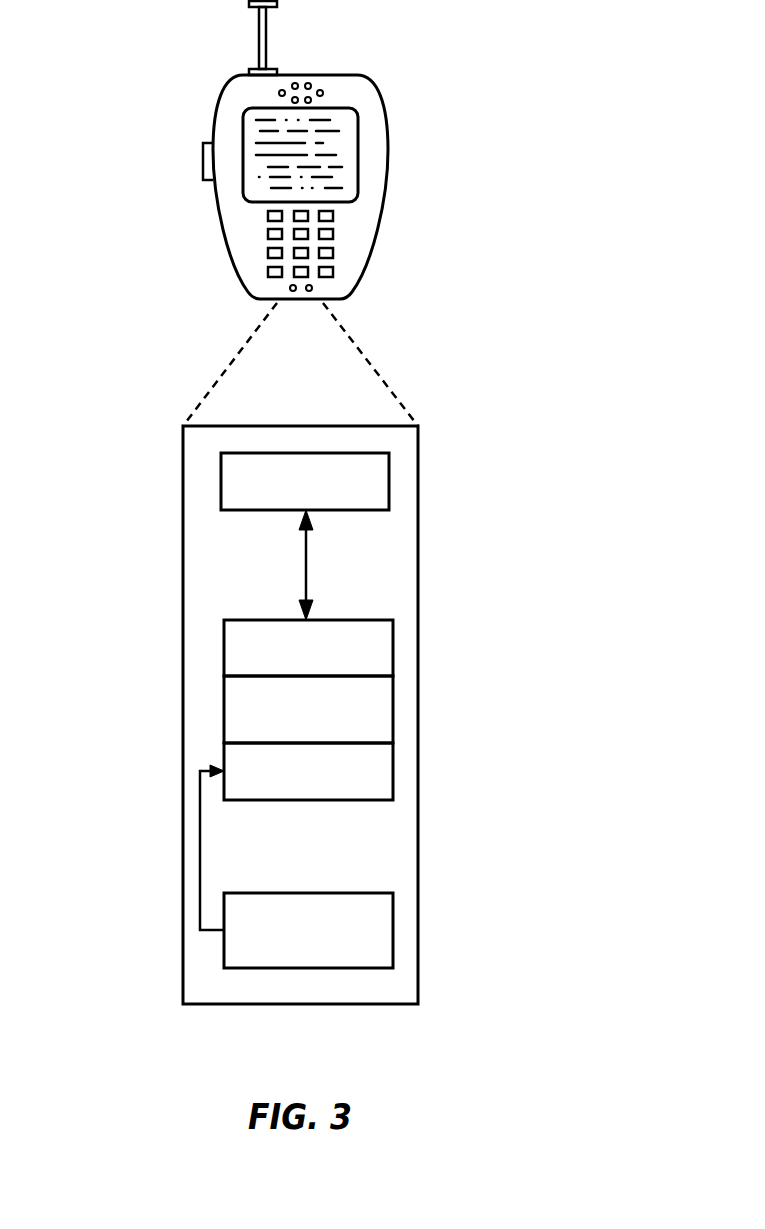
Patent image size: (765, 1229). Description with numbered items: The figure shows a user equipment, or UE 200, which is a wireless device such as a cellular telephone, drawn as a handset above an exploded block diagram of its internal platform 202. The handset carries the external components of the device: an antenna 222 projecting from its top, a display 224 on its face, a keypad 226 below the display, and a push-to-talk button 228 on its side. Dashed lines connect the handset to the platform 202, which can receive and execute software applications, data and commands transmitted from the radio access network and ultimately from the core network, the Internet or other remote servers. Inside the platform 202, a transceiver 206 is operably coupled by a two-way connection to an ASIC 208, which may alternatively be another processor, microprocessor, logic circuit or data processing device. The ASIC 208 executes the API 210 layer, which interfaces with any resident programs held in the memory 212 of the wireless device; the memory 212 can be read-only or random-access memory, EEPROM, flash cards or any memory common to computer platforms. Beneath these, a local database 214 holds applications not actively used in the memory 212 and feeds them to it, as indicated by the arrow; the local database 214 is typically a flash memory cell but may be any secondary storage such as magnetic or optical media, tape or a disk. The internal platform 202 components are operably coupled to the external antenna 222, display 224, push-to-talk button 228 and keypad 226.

The UE 200 is at (367, 279).
The platform 202 is at (183, 622).
The transceiver 206 is at (389, 483).
The ASIC 208 is at (393, 656).
The API 210 is at (393, 705).
The memory 212 is at (393, 770).
The local database 214 is at (393, 912).
The antenna 222 is at (266, 16).
The display 224 is at (358, 142).
The keypad 226 is at (333, 234).
The push-to-talk button 228 is at (203, 152).